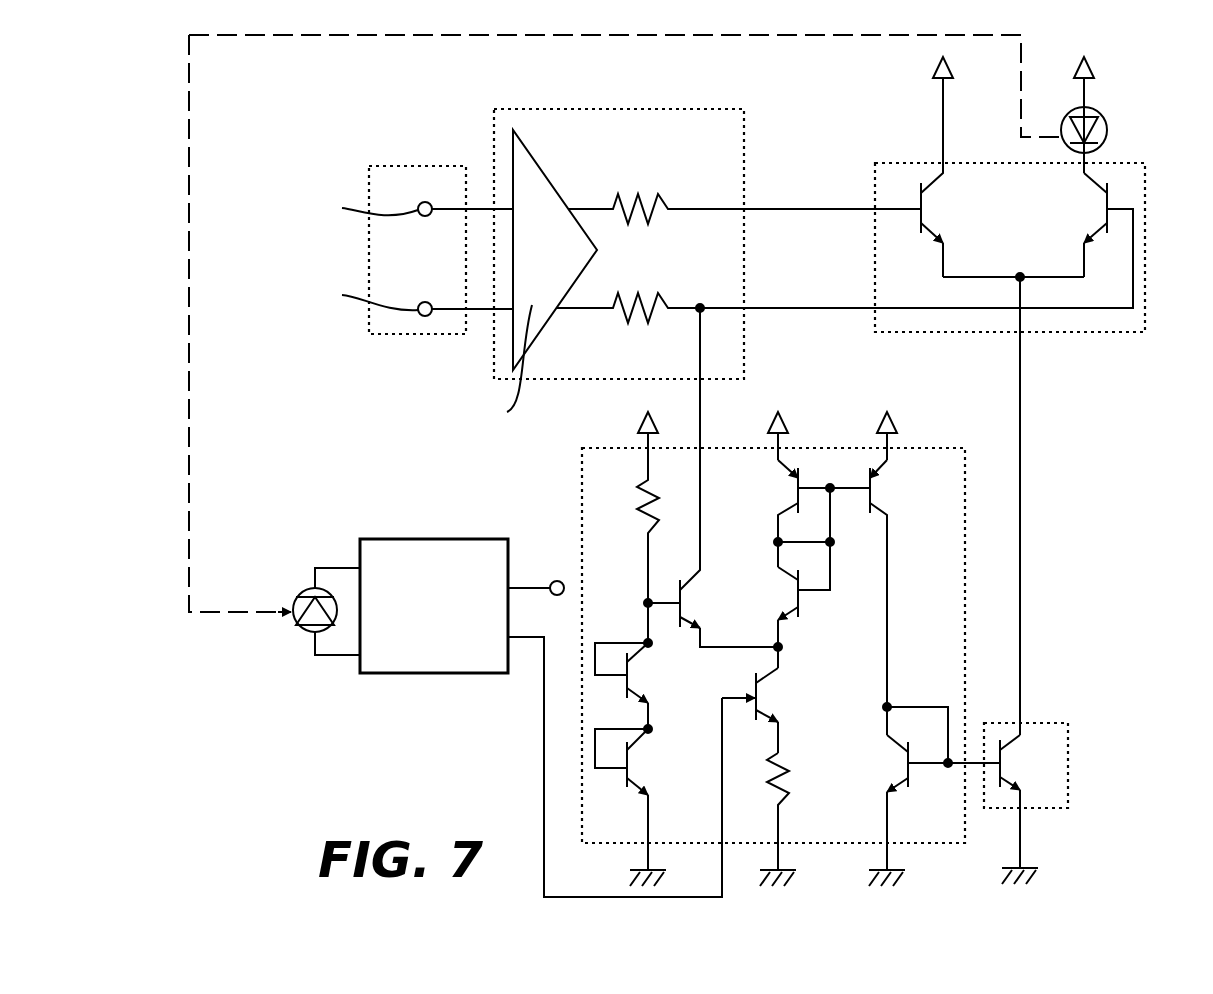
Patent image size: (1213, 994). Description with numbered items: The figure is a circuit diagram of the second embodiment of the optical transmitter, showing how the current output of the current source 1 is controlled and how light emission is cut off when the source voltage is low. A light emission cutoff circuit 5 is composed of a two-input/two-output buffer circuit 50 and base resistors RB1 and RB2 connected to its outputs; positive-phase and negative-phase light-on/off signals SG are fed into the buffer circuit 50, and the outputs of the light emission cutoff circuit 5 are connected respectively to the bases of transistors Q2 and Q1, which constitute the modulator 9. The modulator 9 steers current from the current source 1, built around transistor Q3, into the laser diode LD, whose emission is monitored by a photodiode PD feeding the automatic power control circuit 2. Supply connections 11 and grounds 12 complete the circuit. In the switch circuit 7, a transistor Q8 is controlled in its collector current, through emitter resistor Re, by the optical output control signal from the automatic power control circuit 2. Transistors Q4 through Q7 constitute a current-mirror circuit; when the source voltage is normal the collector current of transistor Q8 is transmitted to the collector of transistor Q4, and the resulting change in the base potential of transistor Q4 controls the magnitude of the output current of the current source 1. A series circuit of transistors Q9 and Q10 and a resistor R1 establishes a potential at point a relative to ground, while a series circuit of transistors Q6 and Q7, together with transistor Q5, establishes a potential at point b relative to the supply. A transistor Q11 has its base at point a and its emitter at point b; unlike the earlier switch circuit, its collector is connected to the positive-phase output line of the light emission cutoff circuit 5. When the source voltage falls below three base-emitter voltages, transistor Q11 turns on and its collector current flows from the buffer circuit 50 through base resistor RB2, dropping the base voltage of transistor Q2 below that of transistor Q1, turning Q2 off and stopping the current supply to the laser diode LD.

The current source 1 is at (1070, 773).
The automatic power control circuit 2 is at (422, 539).
The light emission cutoff circuit 5 is at (677, 109).
The buffer circuit 50 is at (556, 190).
The switch circuit 7 is at (968, 538).
The modulator 9 is at (912, 163).
The power supply 11 is at (935, 72).
The ground 12 is at (630, 871).
The signal terminal SG is at (408, 166).
The base resistor RB1 is at (744, 193).
The base resistor RB2 is at (844, 266).
The resistor R1 is at (628, 538).
The emitter resistor Re is at (794, 811).
The laser diode LD is at (1107, 123).
The photodiode PD is at (300, 626).
The transistor Q1 is at (942, 177).
The transistor Q2 is at (1084, 225).
The transistor Q3 is at (1022, 801).
The transistor Q4 is at (927, 802).
The transistor Q5 is at (891, 584).
The transistor Q6 is at (769, 500).
The transistor Q7 is at (775, 617).
The transistor Q8 is at (761, 710).
The transistor Q9 is at (635, 799).
The transistor Q10 is at (642, 686).
The transistor Q11 is at (729, 477).